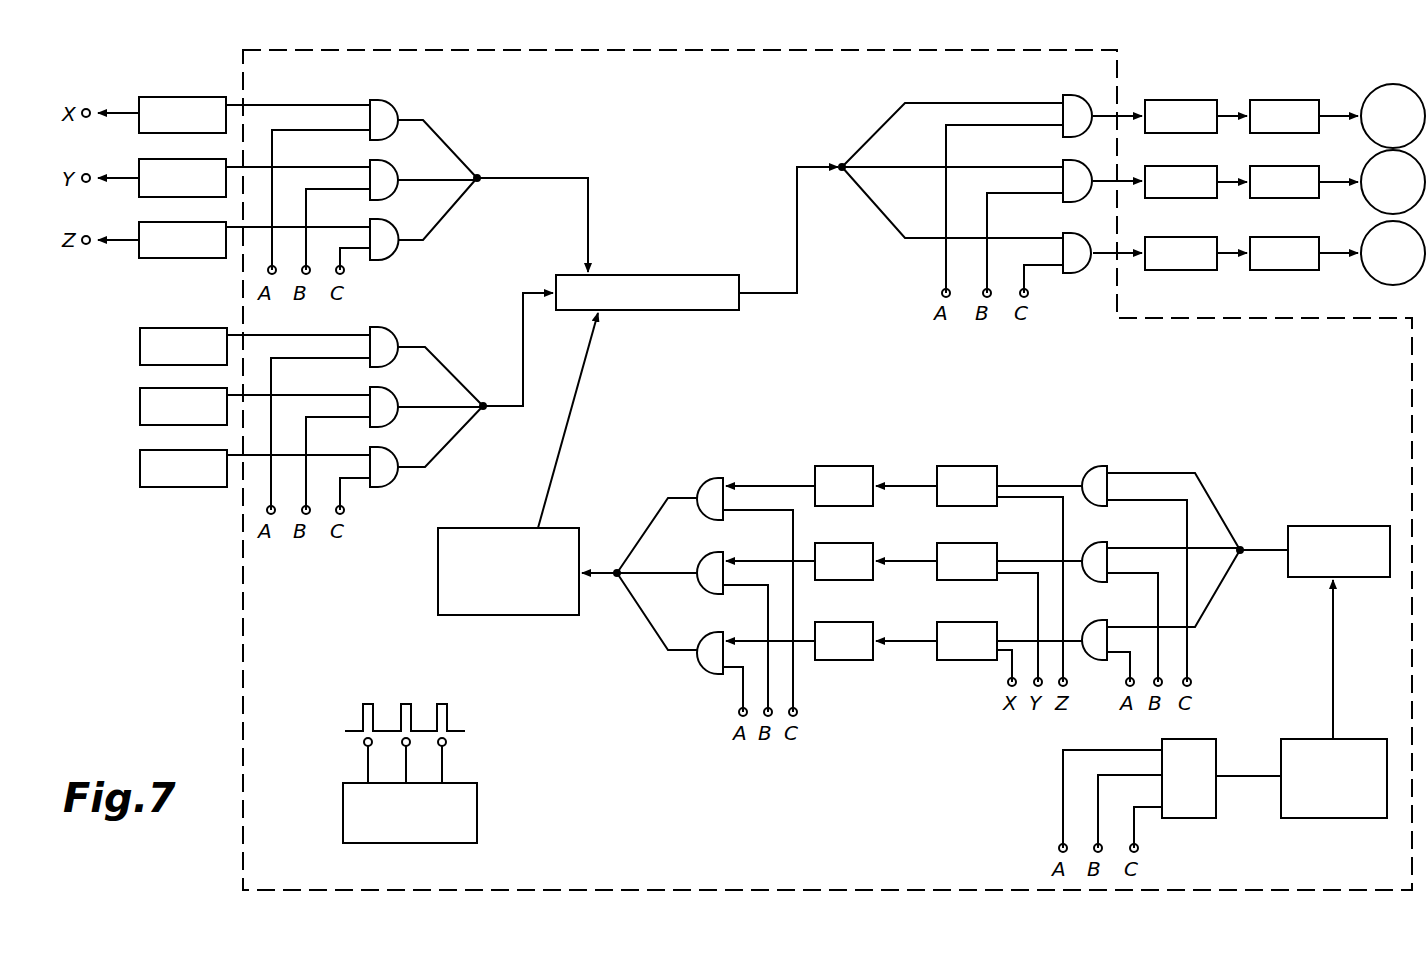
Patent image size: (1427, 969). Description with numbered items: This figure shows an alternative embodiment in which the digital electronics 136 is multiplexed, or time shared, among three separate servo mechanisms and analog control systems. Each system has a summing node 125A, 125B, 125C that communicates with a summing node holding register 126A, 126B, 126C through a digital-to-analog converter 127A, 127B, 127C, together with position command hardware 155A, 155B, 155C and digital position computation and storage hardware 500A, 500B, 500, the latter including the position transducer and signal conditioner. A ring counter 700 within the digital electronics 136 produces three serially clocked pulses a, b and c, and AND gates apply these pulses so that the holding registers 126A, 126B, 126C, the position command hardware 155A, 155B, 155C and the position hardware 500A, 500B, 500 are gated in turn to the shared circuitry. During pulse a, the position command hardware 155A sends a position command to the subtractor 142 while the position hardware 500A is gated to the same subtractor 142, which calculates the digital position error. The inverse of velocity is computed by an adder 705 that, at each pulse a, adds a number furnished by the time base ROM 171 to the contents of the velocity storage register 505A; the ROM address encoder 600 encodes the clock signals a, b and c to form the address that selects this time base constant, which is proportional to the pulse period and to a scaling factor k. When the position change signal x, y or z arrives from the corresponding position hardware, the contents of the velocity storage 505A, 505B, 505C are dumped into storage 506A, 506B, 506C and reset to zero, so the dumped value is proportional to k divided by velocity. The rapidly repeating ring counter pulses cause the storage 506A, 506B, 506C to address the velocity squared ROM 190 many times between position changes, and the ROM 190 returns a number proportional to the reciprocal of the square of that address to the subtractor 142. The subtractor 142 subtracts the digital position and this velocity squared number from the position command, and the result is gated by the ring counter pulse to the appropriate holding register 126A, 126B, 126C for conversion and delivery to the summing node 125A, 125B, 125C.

The digital electronics 136 is at (243, 662).
The digital position computation and storage hardware 500A is at (182, 115).
The digital position computation and storage hardware 500B is at (182, 178).
The digital position computation and storage hardware 500 is at (182, 240).
The position command hardware 155A is at (183, 346).
The position command hardware 155B is at (183, 406).
The position command hardware 155C is at (183, 468).
The subtractor 142 is at (671, 275).
The velocity squared ROM 190 is at (518, 528).
The summing node holding register 126A is at (1181, 116).
The summing node holding register 126B is at (1181, 182).
The summing node holding register 126C is at (1181, 253).
The digital-to-analog converter 127A is at (1284, 116).
The digital-to-analog converter 127B is at (1284, 182).
The digital-to-analog converter 127C is at (1284, 253).
The summing node 125A is at (1393, 116).
The summing node 125B is at (1393, 182).
The summing node 125C is at (1393, 253).
The velocity storage register 505A is at (967, 628).
The velocity storage register 505B is at (967, 548).
The velocity storage register 505C is at (967, 473).
The storage 506A is at (844, 628).
The storage 506B is at (844, 548).
The storage 506C is at (844, 473).
The adder 705 is at (1334, 526).
The ROM address encoder 600 is at (1187, 818).
The time base ROM 171 is at (1330, 818).
The ring counter 700 is at (403, 843).